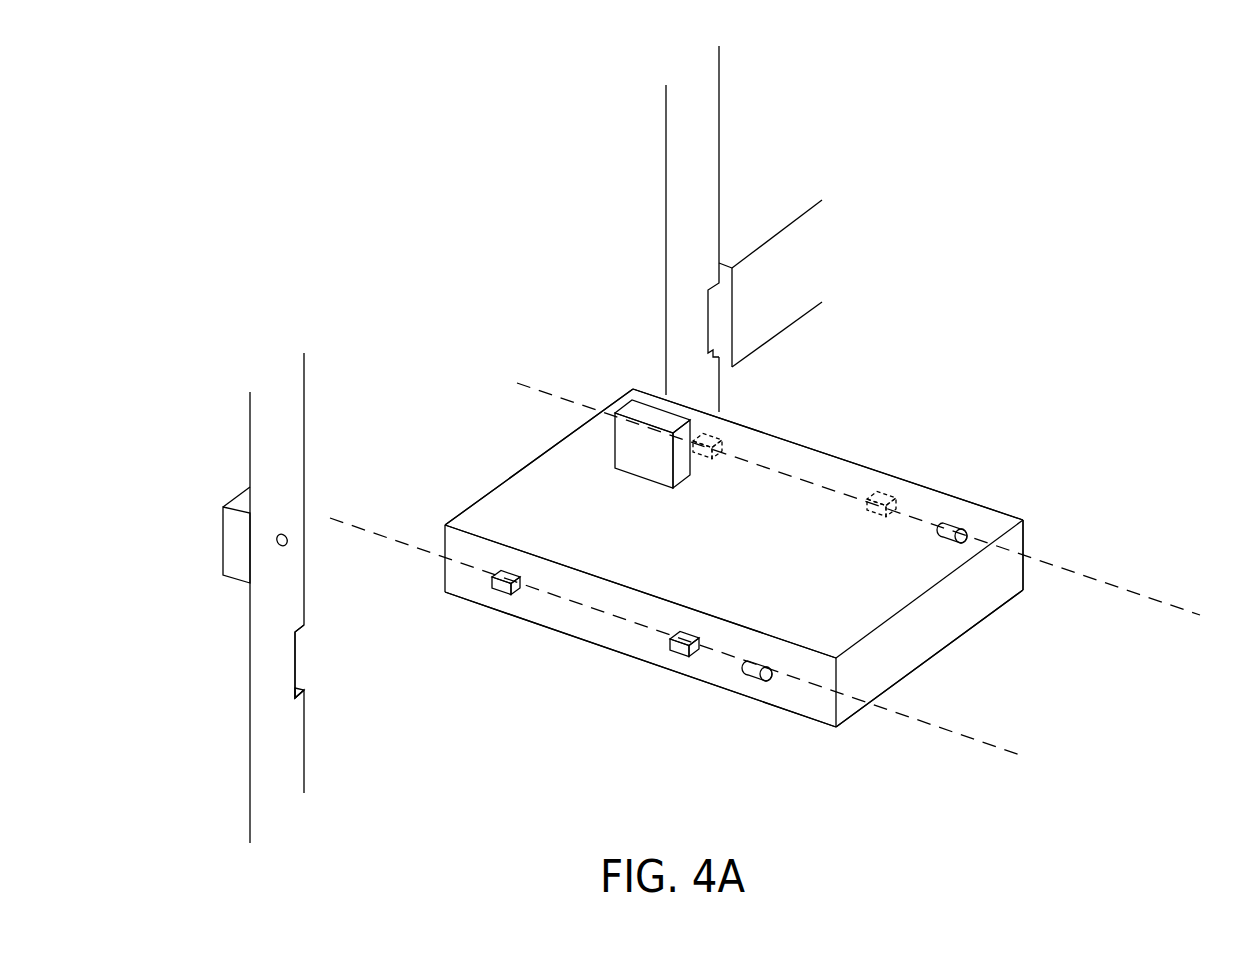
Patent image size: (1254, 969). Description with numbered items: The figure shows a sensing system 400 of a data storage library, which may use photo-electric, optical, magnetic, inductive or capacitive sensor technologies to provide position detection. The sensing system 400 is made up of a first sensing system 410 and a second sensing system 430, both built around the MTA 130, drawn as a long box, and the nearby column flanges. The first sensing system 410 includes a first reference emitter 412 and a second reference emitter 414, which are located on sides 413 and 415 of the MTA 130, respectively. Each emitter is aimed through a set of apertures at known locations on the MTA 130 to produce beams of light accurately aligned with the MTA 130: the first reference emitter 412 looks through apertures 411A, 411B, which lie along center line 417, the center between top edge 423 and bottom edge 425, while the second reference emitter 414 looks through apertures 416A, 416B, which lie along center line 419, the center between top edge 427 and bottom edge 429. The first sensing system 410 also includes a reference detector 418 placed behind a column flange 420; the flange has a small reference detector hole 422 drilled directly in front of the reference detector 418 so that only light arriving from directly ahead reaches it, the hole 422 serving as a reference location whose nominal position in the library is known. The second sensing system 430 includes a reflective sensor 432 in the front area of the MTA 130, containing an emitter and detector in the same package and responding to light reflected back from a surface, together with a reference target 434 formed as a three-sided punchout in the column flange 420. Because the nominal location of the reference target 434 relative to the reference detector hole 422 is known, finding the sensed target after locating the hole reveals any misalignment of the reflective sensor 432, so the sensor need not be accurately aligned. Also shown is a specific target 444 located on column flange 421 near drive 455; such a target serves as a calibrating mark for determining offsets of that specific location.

The sensing system 400 is at (420, 274).
The first sensing system 410 is at (634, 645).
The aperture 411A is at (677, 658).
The aperture 411B is at (498, 596).
The first reference emitter 412 is at (753, 682).
The side 413 is at (710, 686).
The second reference emitter 414 is at (957, 518).
The side 415 is at (943, 482).
The aperture 416A is at (891, 492).
The aperture 416B is at (718, 430).
The center line 417 is at (948, 728).
The reference detector 418 is at (222, 541).
The center line 419 is at (1138, 595).
The column flange 420 is at (292, 478).
The column flange 421 is at (705, 175).
The reference detector hole 422 is at (286, 545).
The top edge 423 is at (800, 643).
The bottom edge 425 is at (796, 724).
The top edge 427 is at (995, 511).
The bottom edge 429 is at (995, 583).
The second sensing system 430 is at (565, 415).
The reflective sensor 432 is at (640, 405).
The reference target 434 is at (300, 658).
The specific target 444 is at (715, 320).
The drive 455 is at (798, 308).
The MTA 130 is at (857, 451).